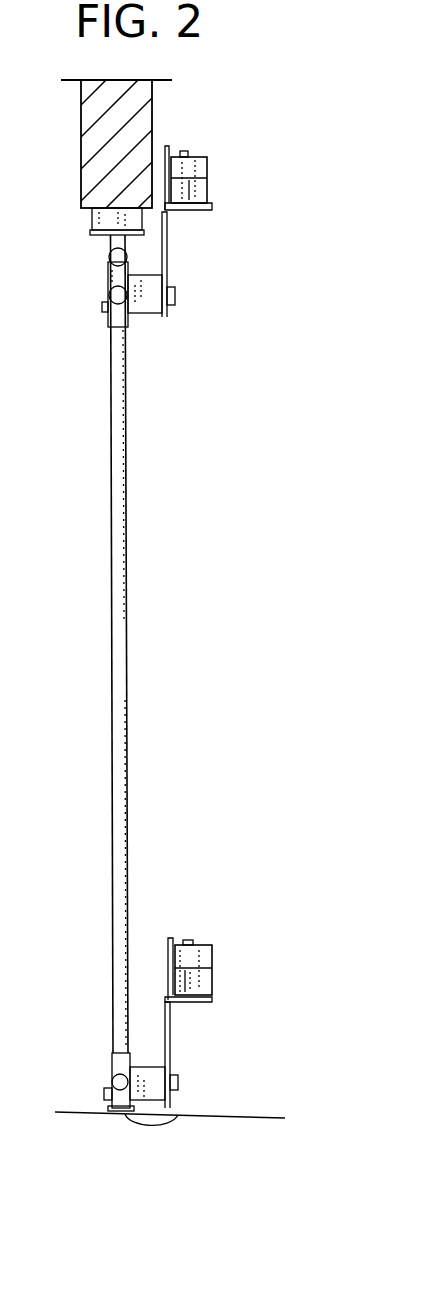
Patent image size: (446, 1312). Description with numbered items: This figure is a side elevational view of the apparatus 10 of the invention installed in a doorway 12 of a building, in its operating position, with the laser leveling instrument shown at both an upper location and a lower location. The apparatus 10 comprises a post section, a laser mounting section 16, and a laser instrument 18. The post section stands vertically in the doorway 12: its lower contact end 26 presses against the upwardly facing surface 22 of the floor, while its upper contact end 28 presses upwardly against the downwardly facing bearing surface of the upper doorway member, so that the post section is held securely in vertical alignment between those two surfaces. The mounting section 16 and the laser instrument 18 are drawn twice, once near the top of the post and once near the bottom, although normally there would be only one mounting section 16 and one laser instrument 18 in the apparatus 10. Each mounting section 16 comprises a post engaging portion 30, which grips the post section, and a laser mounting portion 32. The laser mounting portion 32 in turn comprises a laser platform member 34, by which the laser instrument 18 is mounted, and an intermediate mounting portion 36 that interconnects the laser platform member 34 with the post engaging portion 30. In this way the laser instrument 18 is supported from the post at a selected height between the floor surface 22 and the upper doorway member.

The apparatus 10 is at (152, 472).
The doorway 12 is at (143, 119).
The laser mounting section 16 is at (170, 260).
The laser instrument 18 is at (203, 165).
The upwardly facing surface 22 is at (268, 1113).
The lower contact end 26 is at (173, 1113).
The upper contact end 28 is at (96, 220).
The post engaging portion 30 is at (122, 316).
The laser mounting portion 32 is at (168, 146).
The laser platform member 34 is at (193, 213).
The intermediate mounting portion 36 is at (167, 228).